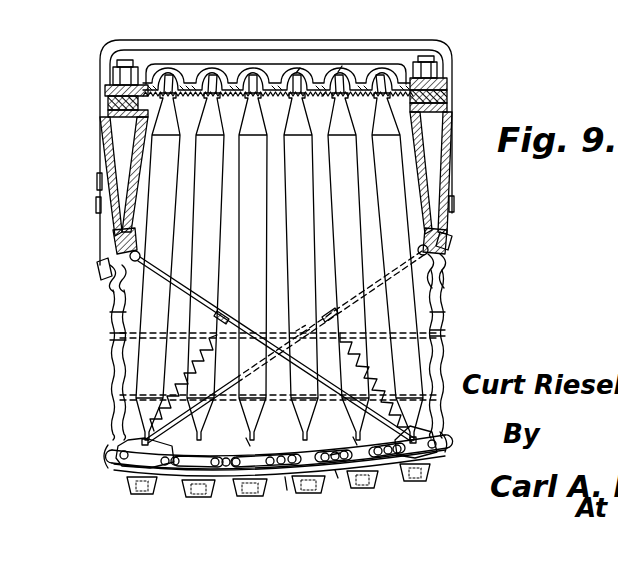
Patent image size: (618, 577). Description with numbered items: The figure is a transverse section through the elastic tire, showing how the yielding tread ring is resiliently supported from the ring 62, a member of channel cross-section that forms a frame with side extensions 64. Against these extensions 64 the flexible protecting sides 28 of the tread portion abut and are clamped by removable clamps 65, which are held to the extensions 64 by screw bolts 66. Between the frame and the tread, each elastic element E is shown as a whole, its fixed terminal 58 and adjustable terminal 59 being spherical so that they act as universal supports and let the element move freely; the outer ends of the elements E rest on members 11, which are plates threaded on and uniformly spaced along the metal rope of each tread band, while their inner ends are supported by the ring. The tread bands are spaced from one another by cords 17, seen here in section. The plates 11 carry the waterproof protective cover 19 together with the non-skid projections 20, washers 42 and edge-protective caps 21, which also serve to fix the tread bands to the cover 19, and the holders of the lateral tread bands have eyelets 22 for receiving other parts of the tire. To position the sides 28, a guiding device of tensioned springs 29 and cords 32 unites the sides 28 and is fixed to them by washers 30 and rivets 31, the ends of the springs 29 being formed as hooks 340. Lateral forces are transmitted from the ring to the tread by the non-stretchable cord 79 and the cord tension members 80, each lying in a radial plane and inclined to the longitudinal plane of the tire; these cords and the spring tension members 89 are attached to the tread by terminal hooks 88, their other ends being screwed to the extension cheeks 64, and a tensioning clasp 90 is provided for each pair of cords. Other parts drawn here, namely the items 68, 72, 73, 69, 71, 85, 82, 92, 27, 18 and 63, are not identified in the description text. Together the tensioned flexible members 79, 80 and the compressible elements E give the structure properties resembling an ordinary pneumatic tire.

The ring 62 is at (258, 56).
The bus bar 68 is at (362, 78).
The adjustable terminal 59 is at (338, 72).
The serrated strip 72 is at (232, 97).
The serrated strip 73 is at (323, 97).
The terminal bolt 69 is at (113, 68).
The insulating block 71 is at (448, 105).
The side extensions 64 is at (100, 143).
The removable clamps 65 is at (98, 184).
The screw bolts 66 is at (96, 207).
The clamp 85 is at (114, 242).
The bracket 82 is at (98, 265).
The hooks 340 is at (106, 278).
The sides 28 is at (113, 385).
The tensioned springs 29 is at (112, 311).
The rivets 31 is at (112, 332).
The washers 30 is at (114, 339).
The cords 32 is at (282, 400).
The elastic element E is at (279, 257).
The cord 79 is at (158, 270).
The cord tension members 80 is at (377, 271).
The tensioning clasp 90 is at (224, 318).
The rod section 92 is at (272, 346).
The spring tension members 89 is at (192, 398).
The terminal hooks 88 is at (152, 446).
The bottom rail 27 is at (108, 452).
The edge-protective caps 21 is at (104, 460).
The eyelets 22 is at (443, 438).
The members 11 is at (123, 466).
The chain link 18 is at (172, 459).
The cords 17 is at (222, 470).
The link 63 is at (337, 460).
The fixed terminal 58 is at (246, 438).
The non-skid projections 20 is at (133, 490).
The washers 42 is at (286, 488).
The waterproof protective cover 19 is at (337, 476).